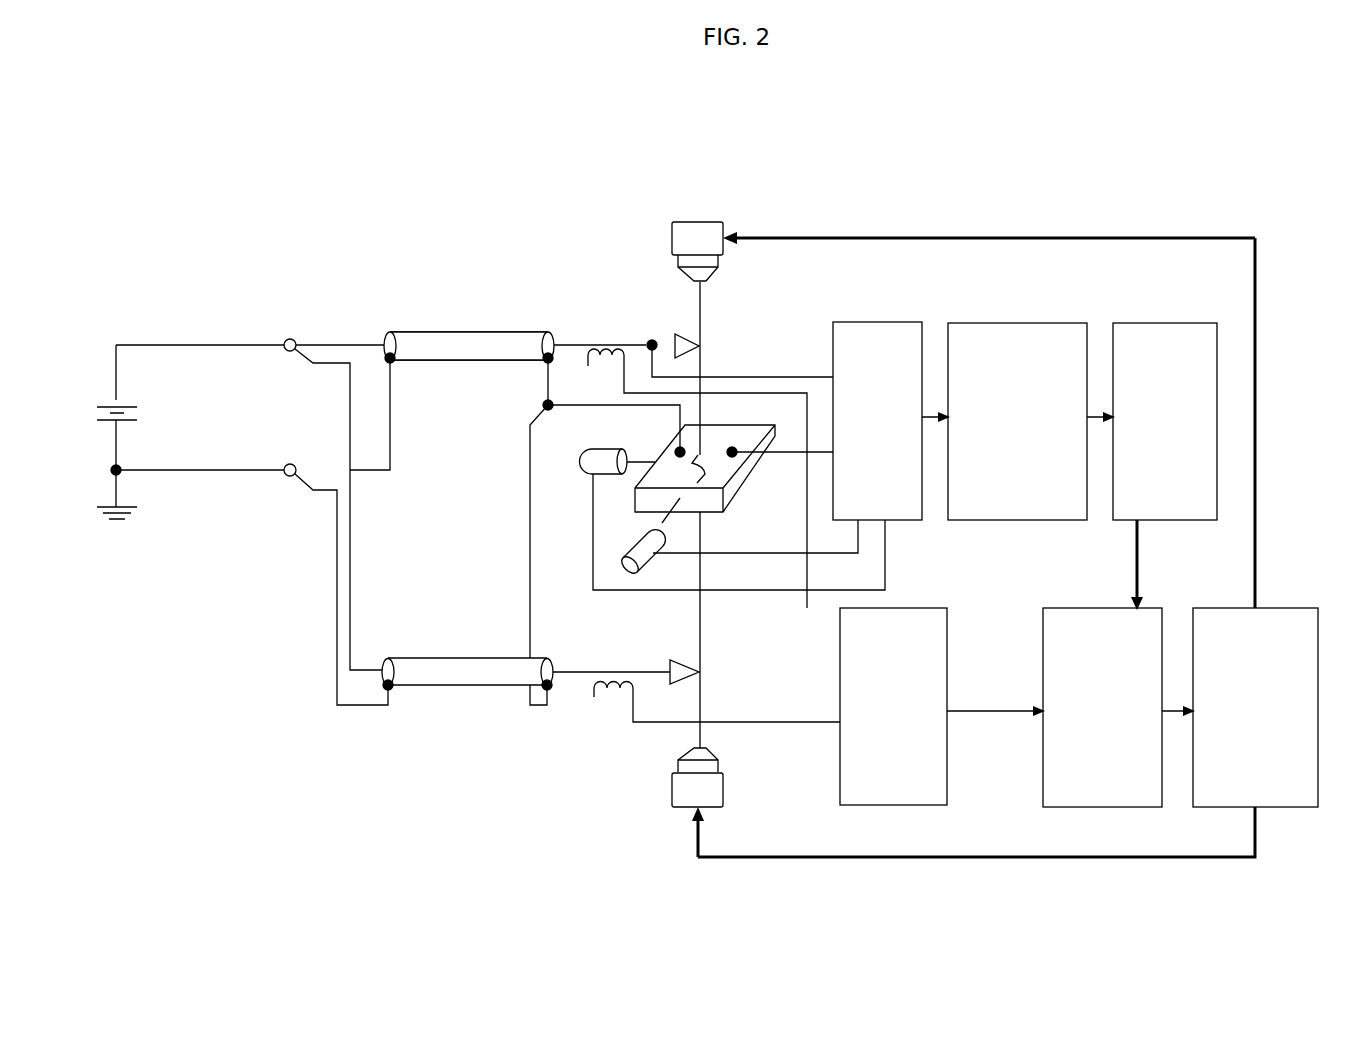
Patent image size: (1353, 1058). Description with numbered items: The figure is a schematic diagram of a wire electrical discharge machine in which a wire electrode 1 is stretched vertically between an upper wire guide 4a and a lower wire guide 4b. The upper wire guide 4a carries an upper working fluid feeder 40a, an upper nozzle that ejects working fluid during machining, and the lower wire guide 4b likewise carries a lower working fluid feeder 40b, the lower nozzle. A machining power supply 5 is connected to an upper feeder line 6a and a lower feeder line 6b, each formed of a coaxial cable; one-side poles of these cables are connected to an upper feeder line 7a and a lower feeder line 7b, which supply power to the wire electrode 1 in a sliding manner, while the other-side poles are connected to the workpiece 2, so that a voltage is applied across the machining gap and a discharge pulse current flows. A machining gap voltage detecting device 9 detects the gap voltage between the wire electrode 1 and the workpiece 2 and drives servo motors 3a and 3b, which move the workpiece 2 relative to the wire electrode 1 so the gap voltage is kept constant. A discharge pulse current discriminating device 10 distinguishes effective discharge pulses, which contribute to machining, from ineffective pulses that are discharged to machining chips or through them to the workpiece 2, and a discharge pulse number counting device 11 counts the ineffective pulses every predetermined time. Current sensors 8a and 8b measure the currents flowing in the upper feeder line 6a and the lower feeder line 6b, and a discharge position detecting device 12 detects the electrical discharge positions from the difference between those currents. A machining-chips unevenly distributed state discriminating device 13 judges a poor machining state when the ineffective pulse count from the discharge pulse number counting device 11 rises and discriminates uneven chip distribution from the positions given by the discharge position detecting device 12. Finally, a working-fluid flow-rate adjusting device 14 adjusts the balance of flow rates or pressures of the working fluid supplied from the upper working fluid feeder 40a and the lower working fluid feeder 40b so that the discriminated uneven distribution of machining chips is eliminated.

The wire electrode 1 is at (703, 295).
The workpiece 2 is at (745, 465).
The servo motor 3a is at (585, 465).
The servo motor 3b is at (630, 558).
The upper wire guide 4a is at (700, 222).
The lower wire guide 4b is at (723, 790).
The machining power supply 5 is at (108, 401).
The upper feeder line 6a is at (430, 333).
The lower feeder line 6b is at (430, 658).
The upper feeder line 7a is at (673, 335).
The lower feeder line 7b is at (672, 660).
The current sensor 8a is at (590, 340).
The current sensor 8b is at (610, 693).
The machining gap voltage detecting device 9 is at (873, 320).
The discharge pulse current discriminating device 10 is at (985, 321).
The discharge pulse number counting device 11 is at (1138, 321).
The discharge position detecting device 12 is at (915, 604).
The machining-chips unevenly distributed state discriminating device 13 is at (1075, 604).
The working-fluid flow-rate adjusting device 14 is at (1290, 606).
The upper working fluid feeder 40a is at (676, 268).
The lower working fluid feeder 40b is at (678, 763).